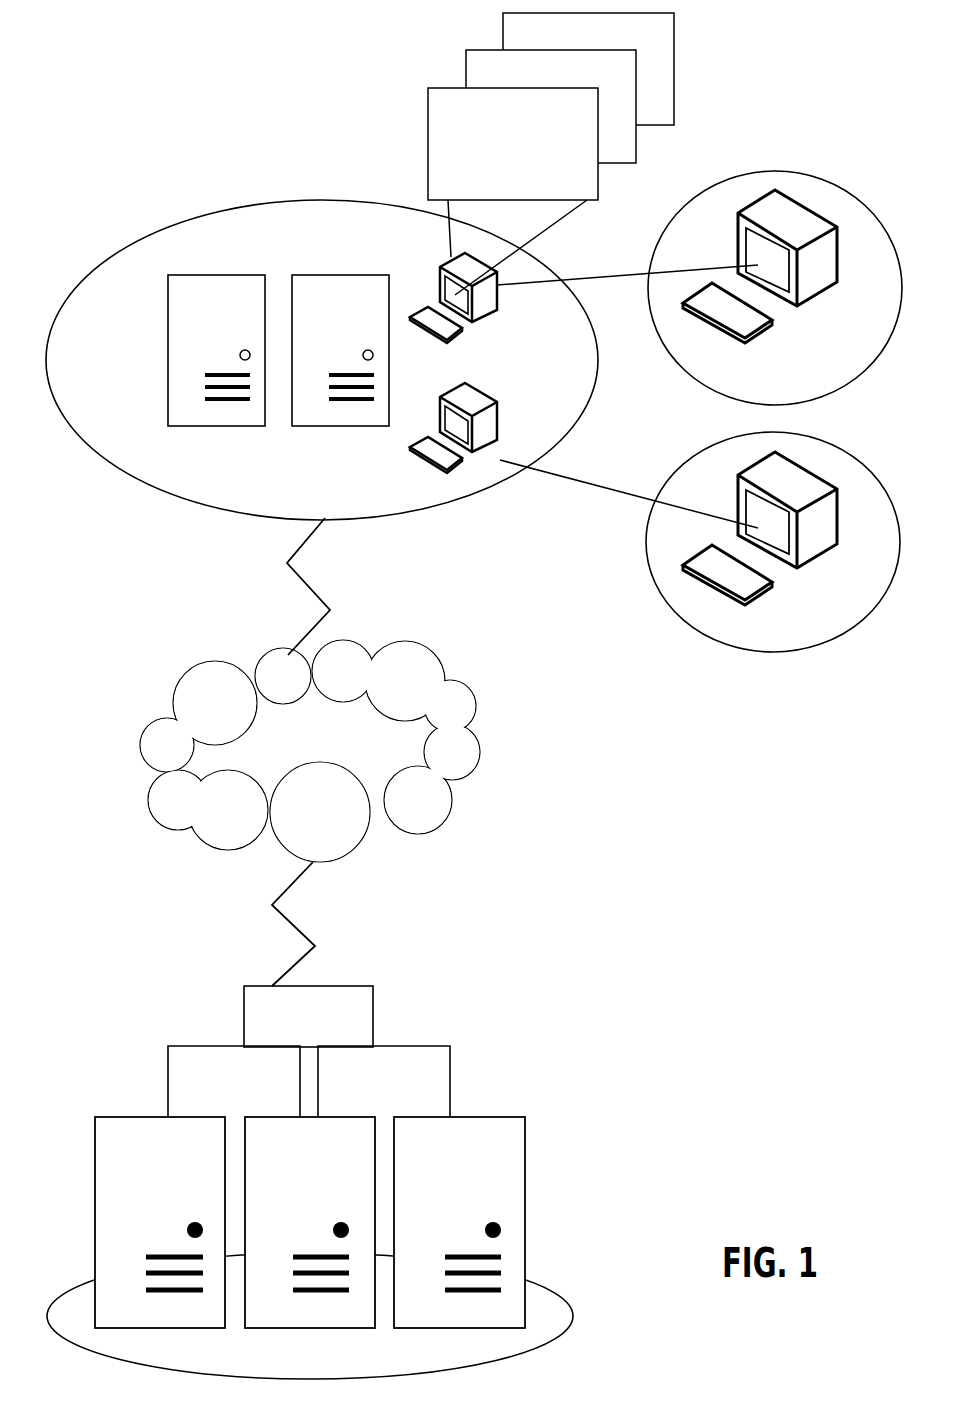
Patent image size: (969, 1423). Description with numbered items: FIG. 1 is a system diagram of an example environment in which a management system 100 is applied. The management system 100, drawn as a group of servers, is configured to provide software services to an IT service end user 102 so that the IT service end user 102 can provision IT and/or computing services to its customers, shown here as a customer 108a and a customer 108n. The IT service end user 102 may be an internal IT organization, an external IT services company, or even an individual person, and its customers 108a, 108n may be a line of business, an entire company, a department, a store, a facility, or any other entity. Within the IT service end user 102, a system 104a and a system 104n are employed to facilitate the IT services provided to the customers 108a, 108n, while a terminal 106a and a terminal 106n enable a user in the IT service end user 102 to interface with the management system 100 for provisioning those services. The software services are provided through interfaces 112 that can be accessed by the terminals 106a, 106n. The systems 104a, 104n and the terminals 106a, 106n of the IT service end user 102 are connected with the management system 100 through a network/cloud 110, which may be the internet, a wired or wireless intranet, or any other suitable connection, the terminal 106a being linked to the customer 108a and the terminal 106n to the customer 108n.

The management system 100 is at (301, 1377).
The IT service end user 102 is at (392, 497).
The system 104a is at (197, 277).
The system 104n is at (352, 273).
The terminal 106a is at (495, 314).
The terminal 106n is at (500, 408).
The customer 108a is at (775, 288).
The customer 108n is at (773, 542).
The network/cloud 110 is at (290, 765).
The interfaces 112 is at (585, 158).